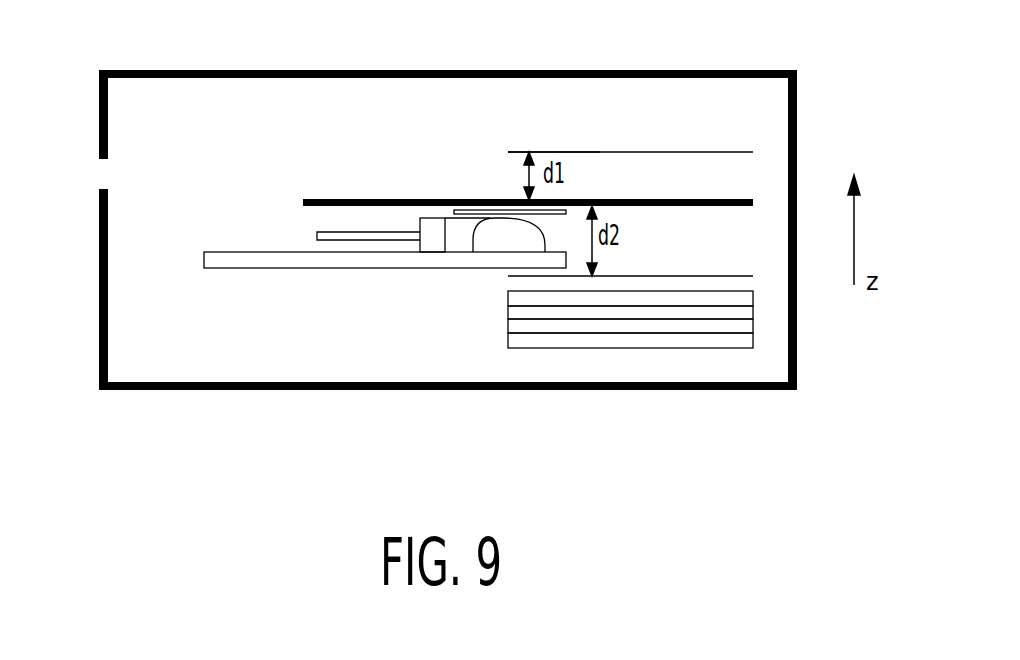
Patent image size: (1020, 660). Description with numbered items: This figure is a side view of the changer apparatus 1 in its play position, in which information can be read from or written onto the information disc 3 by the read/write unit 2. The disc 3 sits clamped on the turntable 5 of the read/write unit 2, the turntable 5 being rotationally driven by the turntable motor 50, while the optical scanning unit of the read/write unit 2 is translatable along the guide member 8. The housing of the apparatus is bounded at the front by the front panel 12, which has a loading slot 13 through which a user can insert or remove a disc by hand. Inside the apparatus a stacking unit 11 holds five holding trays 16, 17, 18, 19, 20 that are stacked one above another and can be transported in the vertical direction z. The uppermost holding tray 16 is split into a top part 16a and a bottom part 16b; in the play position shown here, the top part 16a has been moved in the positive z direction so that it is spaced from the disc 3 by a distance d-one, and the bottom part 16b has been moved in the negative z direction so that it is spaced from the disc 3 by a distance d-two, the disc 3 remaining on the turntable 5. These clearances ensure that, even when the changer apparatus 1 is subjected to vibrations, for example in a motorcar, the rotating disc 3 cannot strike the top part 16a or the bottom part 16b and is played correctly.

The changer apparatus 1 is at (452, 70).
The read/write unit 2 is at (305, 268).
The information disc 3 is at (388, 198).
The turntable 5 is at (472, 198).
The guide member 8 is at (343, 235).
The stacking unit 11 is at (730, 368).
The front panel 12 is at (98, 273).
The loading slot 13 is at (104, 176).
The holding tray 16 is at (592, 152).
The top part 16a is at (545, 152).
The bottom part 16b is at (745, 276).
The holding tray 17 is at (628, 295).
The holding tray 18 is at (653, 307).
The holding tray 19 is at (680, 320).
The holding tray 20 is at (703, 333).
The turntable motor 50 is at (495, 240).